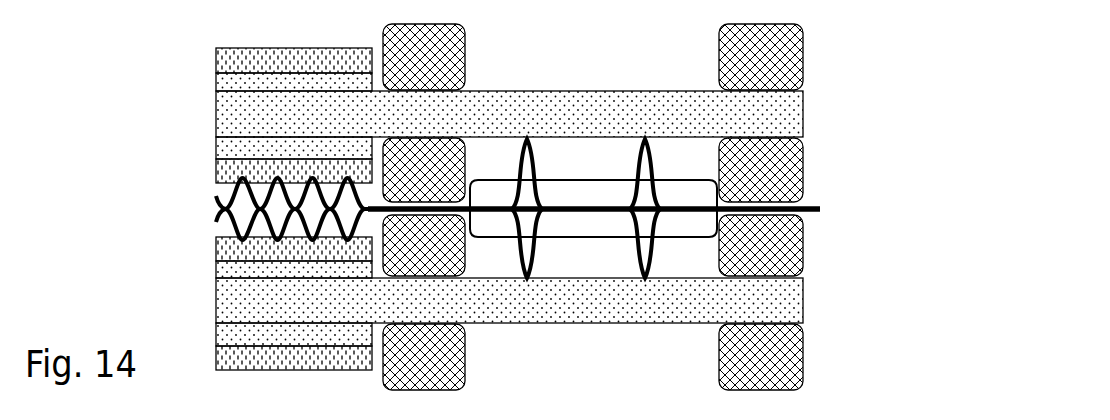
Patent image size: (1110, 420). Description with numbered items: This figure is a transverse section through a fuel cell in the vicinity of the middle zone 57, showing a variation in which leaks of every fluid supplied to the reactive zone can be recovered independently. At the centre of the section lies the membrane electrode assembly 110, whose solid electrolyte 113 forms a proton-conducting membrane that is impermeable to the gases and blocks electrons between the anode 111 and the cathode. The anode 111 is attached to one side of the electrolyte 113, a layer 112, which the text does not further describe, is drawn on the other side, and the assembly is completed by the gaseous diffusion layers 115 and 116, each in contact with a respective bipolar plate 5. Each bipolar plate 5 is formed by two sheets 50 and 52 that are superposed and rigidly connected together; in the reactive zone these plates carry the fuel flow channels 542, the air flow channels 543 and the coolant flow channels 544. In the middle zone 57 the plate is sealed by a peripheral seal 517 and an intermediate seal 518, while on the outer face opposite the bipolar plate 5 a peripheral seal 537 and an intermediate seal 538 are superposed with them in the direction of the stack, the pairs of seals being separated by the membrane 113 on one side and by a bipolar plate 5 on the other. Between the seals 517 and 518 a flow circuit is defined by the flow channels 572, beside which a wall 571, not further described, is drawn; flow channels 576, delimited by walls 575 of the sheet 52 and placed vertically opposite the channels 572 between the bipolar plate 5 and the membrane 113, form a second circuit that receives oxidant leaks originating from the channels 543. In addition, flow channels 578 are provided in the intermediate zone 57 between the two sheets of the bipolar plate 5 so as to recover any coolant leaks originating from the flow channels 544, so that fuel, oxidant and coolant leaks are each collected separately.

The bipolar plate 5 is at (124, 227).
The sheet 50 is at (214, 205).
The sheet 52 is at (211, 221).
The middle zone 57 is at (604, 386).
The membrane electrode assembly 110 is at (153, 67).
The anode 111 is at (216, 82).
The second layer 112 is at (216, 151).
The solid electrolyte 113 is at (216, 114).
The gaseous diffusion layer 115 is at (216, 60).
The gaseous diffusion layer 116 is at (216, 171).
The peripheral seal 517 is at (803, 171).
The intermediate seal 518 is at (465, 173).
The peripheral seal 537 is at (803, 58).
The intermediate seal 538 is at (465, 58).
The flow channels 542 is at (298, 193).
The air flow channels 543 is at (262, 215).
The coolant flow channels 544 is at (352, 205).
The bellows element 571 is at (657, 152).
The flow channels 572 is at (610, 171).
The walls 575 is at (657, 242).
The flow channels 576 is at (610, 269).
The flow channels 578 is at (527, 223).